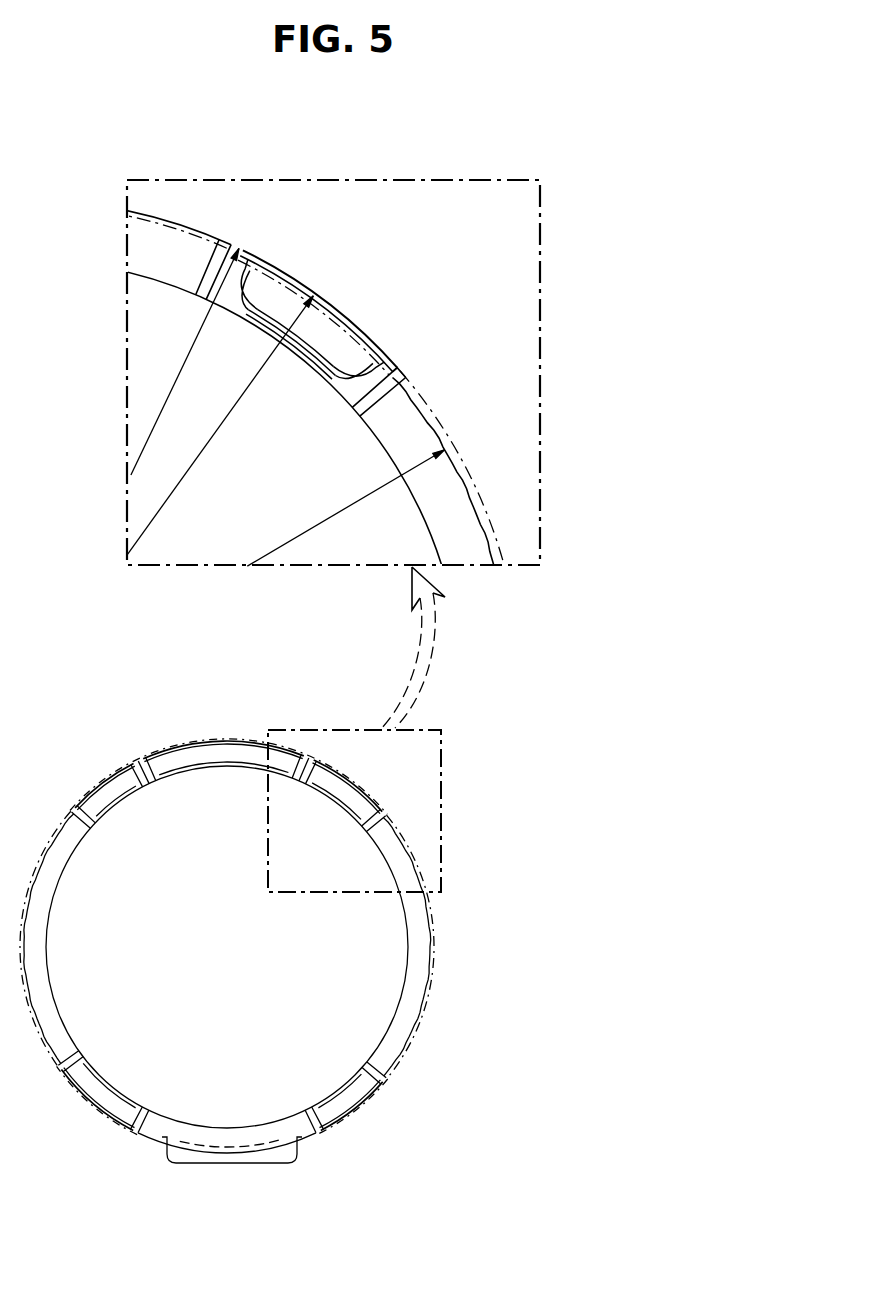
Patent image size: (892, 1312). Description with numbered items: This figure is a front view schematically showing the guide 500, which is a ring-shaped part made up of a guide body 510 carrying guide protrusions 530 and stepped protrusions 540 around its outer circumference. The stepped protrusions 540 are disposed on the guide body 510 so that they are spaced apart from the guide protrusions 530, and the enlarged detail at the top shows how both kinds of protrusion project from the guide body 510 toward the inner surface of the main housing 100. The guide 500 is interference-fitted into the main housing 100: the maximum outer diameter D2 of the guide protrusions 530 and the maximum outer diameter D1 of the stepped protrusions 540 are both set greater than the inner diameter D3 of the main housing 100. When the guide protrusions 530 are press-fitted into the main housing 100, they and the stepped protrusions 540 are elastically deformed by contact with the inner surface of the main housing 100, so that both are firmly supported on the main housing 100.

The main housing 100 is at (397, 365).
The guide 500 is at (540, 907).
The guide body 510 is at (422, 943).
The guide protrusions 530 is at (415, 862).
The stepped protrusions 540 is at (353, 780).
The maximum outer diameter of the stepped protrusions D1 is at (221, 425).
The maximum outer diameter of the guide protrusions D2 is at (345, 508).
The inner diameter of the main housing D3 is at (185, 361).